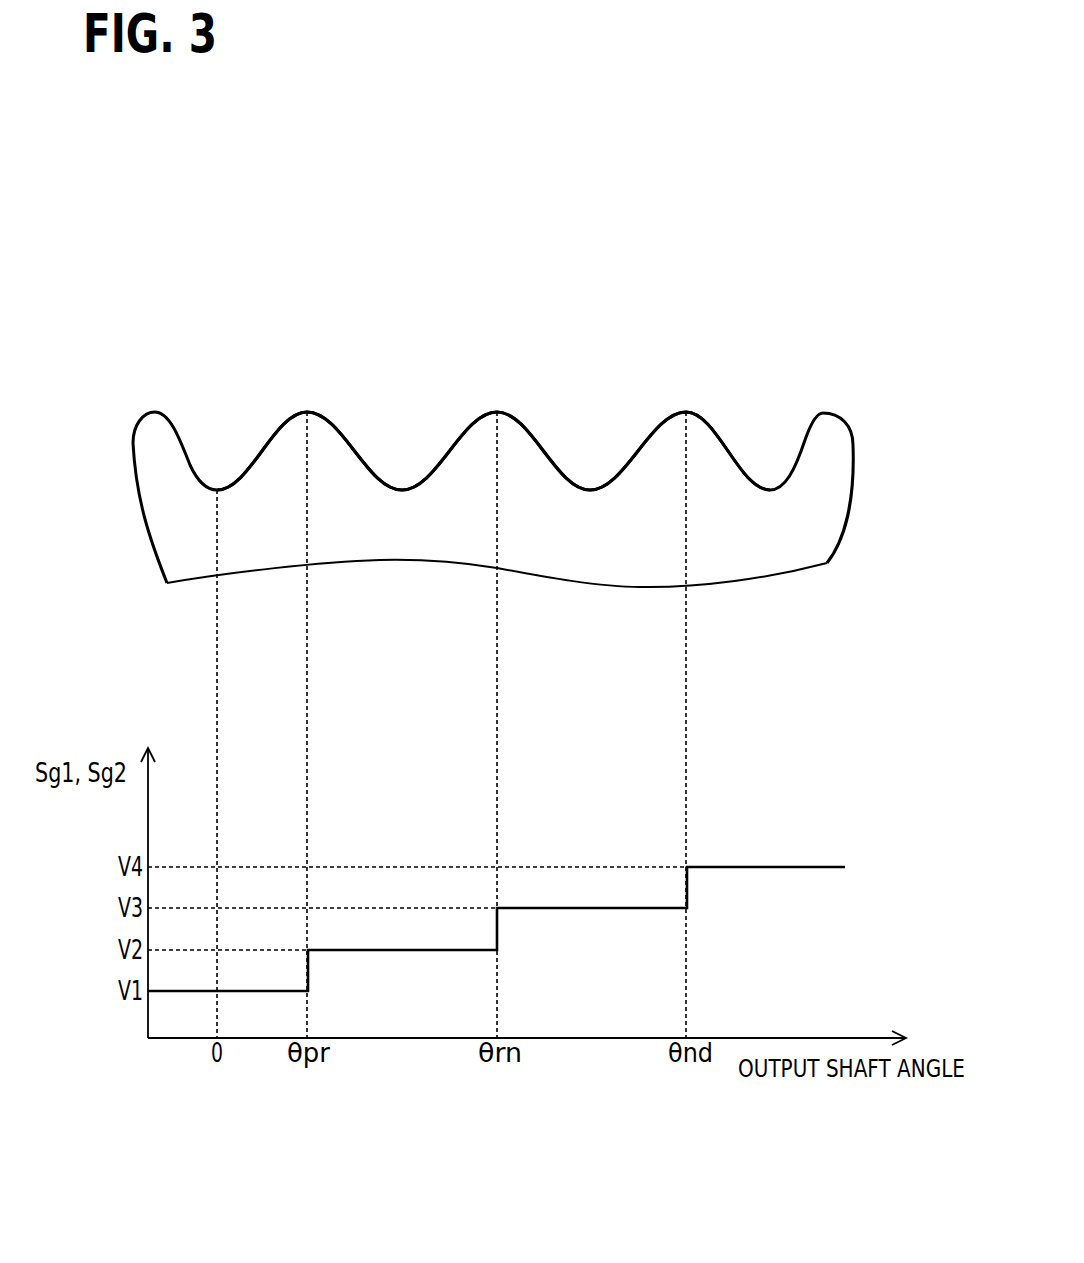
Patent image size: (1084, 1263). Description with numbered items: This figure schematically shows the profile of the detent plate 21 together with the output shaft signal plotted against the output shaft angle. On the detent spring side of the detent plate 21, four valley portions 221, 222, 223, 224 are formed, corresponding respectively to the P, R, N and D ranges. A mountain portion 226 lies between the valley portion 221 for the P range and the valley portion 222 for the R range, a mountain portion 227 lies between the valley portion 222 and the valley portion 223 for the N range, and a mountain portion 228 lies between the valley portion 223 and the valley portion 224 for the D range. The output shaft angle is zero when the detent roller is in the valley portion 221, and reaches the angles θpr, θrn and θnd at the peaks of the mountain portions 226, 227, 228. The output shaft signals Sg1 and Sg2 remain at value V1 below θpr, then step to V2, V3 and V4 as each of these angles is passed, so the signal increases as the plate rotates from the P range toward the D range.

The detent plate 21 is at (863, 408).
The valley portion 221 is at (250, 470).
The valley portion 222 is at (440, 466).
The valley portion 223 is at (628, 466).
The valley portion 224 is at (794, 466).
The mountain portion 226 is at (307, 412).
The mountain portion 227 is at (497, 412).
The mountain portion 228 is at (686, 412).